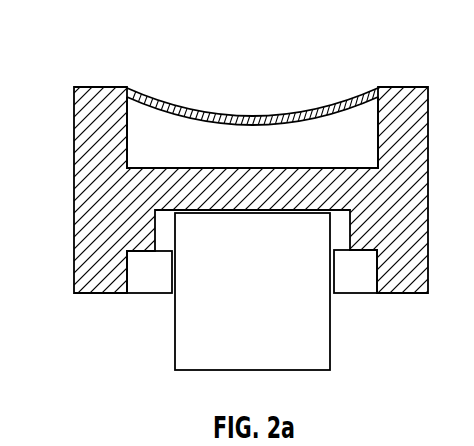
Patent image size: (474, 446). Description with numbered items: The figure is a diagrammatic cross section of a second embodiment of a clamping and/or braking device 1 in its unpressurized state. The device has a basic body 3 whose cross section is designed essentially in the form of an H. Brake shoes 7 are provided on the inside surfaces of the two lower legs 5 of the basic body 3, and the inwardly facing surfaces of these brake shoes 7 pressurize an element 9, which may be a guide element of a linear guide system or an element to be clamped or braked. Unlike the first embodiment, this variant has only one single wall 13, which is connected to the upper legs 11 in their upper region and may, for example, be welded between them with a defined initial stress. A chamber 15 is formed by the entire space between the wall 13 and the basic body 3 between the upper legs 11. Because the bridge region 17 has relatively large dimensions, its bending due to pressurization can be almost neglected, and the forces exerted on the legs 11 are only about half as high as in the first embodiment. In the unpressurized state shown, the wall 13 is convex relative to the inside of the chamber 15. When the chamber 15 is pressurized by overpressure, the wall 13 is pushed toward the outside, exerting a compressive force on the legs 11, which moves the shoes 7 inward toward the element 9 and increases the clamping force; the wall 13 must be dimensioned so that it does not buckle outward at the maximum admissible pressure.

The clamping and/or braking device 1 is at (353, 72).
The basic body 3 is at (428, 149).
The lower legs 5 is at (408, 287).
The brake shoes 7 is at (357, 286).
The element 9 is at (259, 293).
The upper legs 11 is at (80, 126).
The wall 13 is at (262, 117).
The chamber 15 is at (177, 148).
The bridge region 17 is at (268, 168).